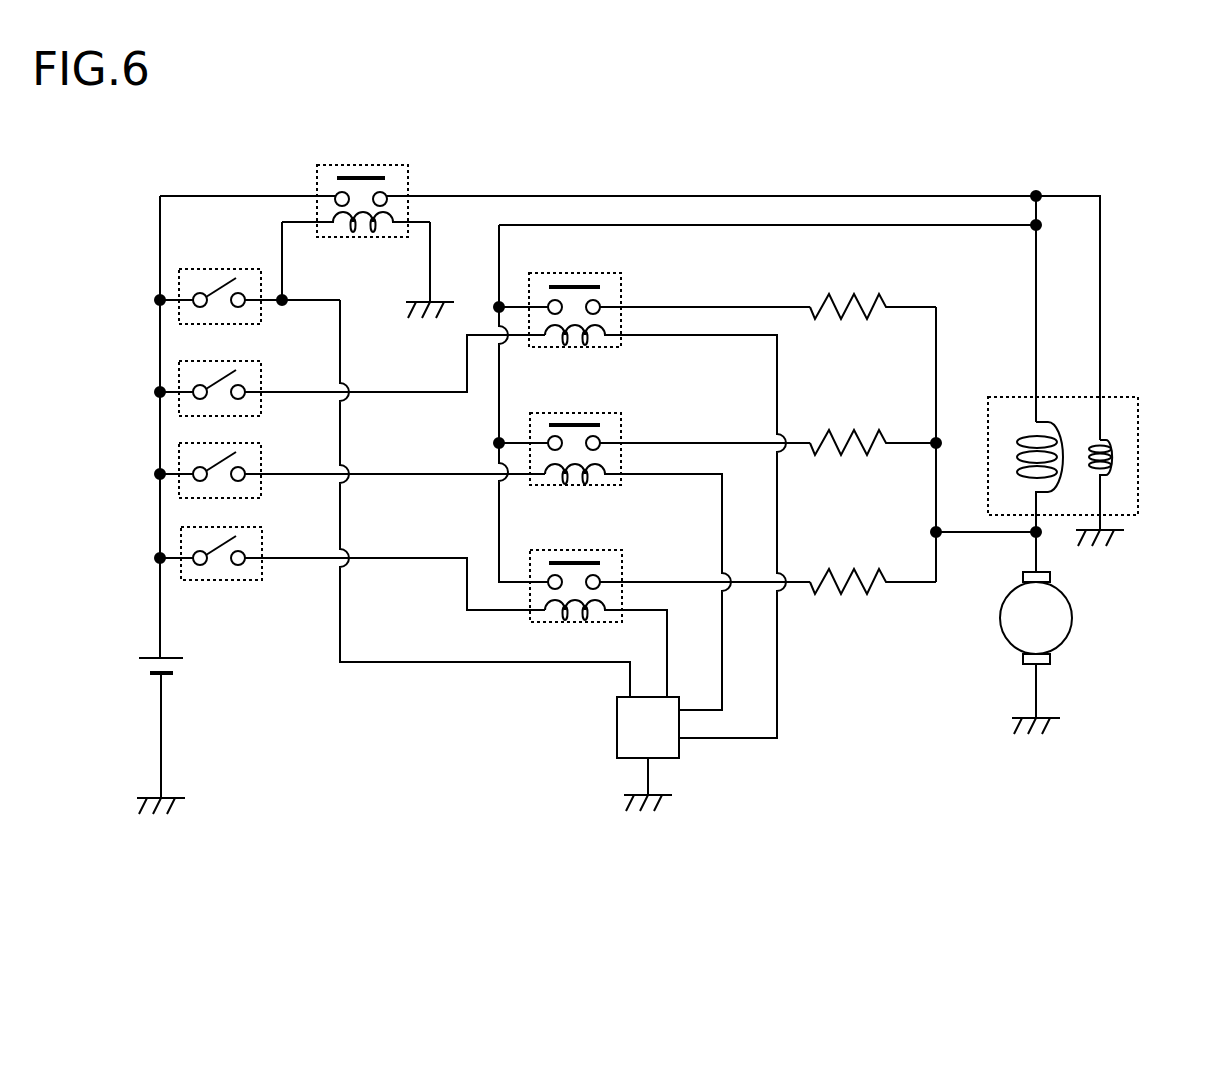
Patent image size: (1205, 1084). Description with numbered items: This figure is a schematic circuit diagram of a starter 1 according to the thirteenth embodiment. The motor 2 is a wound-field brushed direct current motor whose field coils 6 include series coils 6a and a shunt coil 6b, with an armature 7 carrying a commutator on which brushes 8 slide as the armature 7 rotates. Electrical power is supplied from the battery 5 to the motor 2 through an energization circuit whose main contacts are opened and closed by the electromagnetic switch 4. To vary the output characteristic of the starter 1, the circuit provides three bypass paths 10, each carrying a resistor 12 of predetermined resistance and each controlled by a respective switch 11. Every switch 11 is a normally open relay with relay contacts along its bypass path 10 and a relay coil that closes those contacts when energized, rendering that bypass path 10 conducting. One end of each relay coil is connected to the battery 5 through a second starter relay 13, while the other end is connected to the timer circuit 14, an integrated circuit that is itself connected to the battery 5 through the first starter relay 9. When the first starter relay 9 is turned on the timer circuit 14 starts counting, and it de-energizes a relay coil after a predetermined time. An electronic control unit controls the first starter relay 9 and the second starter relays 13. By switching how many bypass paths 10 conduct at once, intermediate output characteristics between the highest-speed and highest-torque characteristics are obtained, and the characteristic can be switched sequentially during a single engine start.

The starter 1 is at (815, 168).
The motor 2 is at (1096, 633).
The electromagnetic switch 4 is at (383, 163).
The battery 5 is at (145, 668).
The field coils 6 is at (1069, 491).
The series coil 6a is at (1017, 460).
The shunt coil 6b is at (1112, 461).
The armature 7 is at (1058, 637).
The brushes 8 is at (1047, 581).
The first starter relay 9 is at (217, 288).
The bypass path 10 is at (737, 305).
The switch 11 is at (622, 289).
The resistor 12 is at (862, 314).
The second starter relay 13 is at (218, 380).
The timer circuit 14 is at (617, 735).